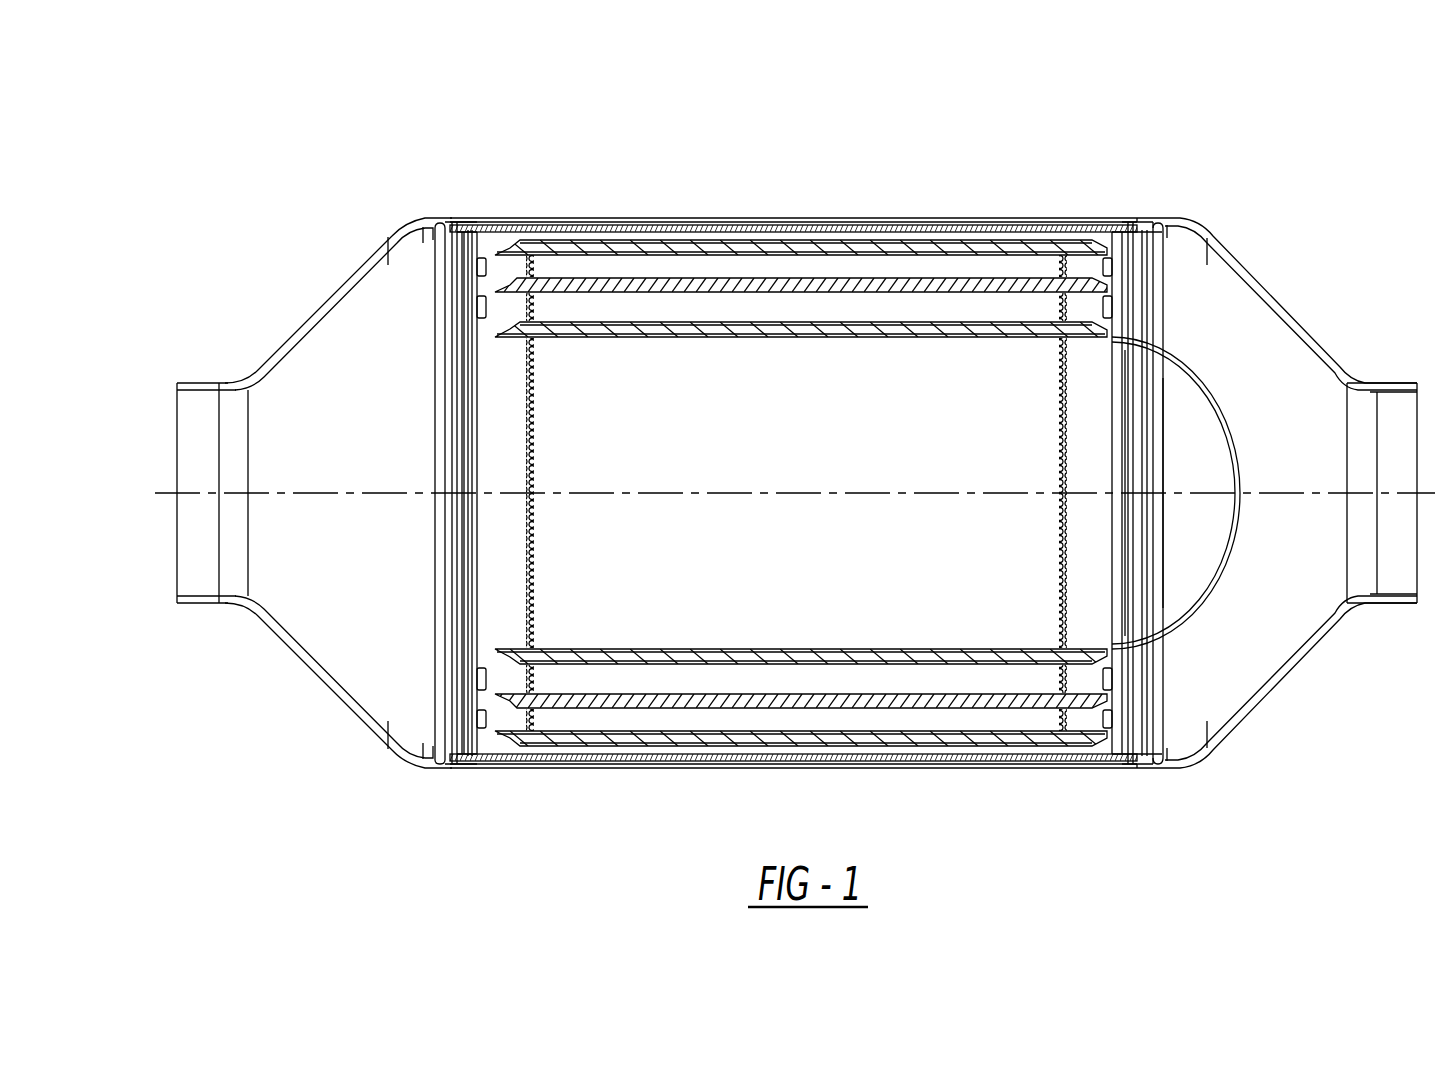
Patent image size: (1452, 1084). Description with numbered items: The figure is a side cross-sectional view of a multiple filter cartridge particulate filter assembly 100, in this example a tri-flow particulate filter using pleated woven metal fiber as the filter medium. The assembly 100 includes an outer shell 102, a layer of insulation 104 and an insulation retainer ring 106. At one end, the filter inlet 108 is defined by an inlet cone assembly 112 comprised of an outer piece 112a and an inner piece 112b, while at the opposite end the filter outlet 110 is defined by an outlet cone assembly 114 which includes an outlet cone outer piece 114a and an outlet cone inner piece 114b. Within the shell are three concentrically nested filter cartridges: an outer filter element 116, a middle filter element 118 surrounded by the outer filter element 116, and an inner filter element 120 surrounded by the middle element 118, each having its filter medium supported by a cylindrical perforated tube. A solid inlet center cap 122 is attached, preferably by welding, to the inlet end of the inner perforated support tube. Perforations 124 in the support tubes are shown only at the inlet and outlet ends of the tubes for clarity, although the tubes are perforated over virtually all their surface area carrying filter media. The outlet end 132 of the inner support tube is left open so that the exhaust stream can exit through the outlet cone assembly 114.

The filter assembly 100 is at (799, 498).
The outer shell 102 is at (650, 222).
The layer of insulation 104 is at (527, 227).
The insulation retainer ring 106 is at (752, 234).
The filter inlet 108 is at (1421, 408).
The filter outlet 110 is at (178, 417).
The inlet cone assembly 112 is at (1277, 567).
The outer piece 112a is at (1242, 740).
The inner piece 112b is at (1238, 668).
The outlet cone assembly 114 is at (315, 550).
The outlet cone outer piece 114a is at (352, 725).
The outlet cone inner piece 114b is at (322, 662).
The outer filter element 116 is at (866, 248).
The middle filter element 118 is at (993, 287).
The inner filter element 120 is at (778, 328).
The solid inlet center cap 122 is at (1193, 378).
The perforations 124 is at (537, 422).
The outlet end 132 is at (475, 388).